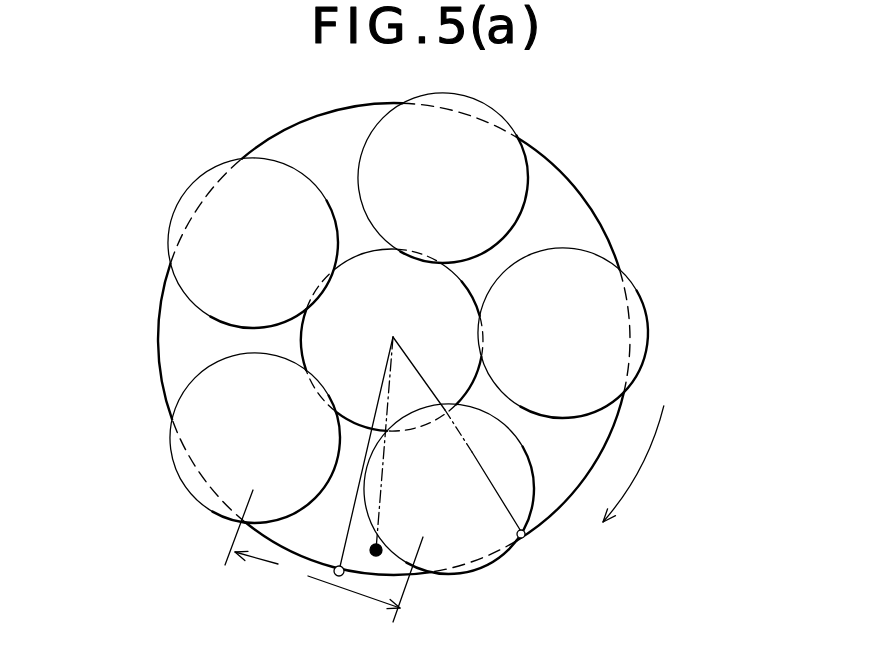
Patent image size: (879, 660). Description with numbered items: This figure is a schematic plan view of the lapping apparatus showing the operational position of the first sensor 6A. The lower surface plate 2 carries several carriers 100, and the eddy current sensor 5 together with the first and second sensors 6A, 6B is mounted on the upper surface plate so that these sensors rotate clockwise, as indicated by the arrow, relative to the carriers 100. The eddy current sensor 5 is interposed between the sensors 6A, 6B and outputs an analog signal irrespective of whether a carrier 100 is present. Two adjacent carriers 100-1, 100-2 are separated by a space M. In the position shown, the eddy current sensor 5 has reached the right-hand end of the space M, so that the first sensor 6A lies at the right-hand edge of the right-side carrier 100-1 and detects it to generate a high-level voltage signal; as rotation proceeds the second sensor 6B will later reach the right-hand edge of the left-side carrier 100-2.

The lower surface plate 2 is at (600, 218).
The carrier 100 is at (648, 318).
The right-side carrier 100-1 is at (488, 569).
The left-side carrier 100-2 is at (238, 519).
The eddy current sensor 5 is at (381, 545).
The first sensor 6A is at (526, 534).
The second sensor 6B is at (334, 571).
The space M is at (324, 556).